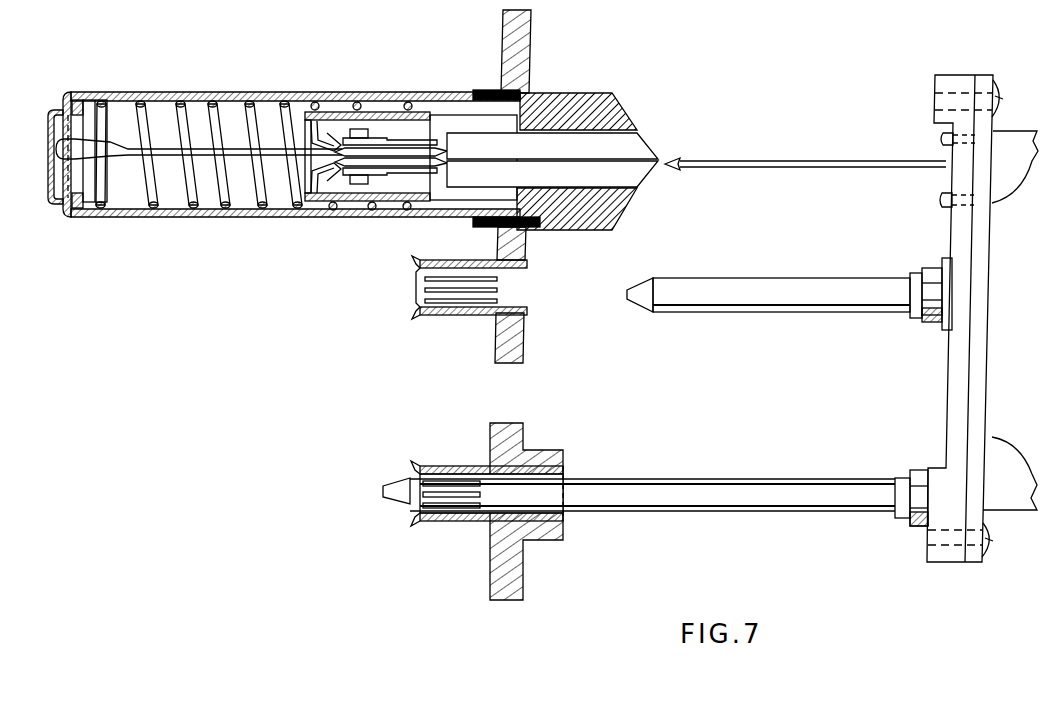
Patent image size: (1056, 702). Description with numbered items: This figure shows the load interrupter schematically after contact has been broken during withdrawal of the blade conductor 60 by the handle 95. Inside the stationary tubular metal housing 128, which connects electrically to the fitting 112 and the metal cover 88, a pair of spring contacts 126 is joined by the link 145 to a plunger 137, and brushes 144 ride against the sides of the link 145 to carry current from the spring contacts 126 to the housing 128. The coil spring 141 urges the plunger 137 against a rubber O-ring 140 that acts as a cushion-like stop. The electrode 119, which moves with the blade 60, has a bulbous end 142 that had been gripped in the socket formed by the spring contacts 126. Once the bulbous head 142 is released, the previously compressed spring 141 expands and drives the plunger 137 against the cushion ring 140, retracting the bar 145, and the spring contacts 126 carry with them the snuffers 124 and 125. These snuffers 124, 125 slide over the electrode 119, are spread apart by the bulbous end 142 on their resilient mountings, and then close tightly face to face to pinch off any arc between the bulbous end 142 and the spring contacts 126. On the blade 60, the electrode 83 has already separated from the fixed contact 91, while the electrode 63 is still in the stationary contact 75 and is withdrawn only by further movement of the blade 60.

The rubber O-ring 140 is at (80, 98).
The coil spring 141 is at (203, 102).
The brushes 144 is at (327, 131).
The tubular metal housing 128 is at (383, 111).
The fitting 112 is at (570, 93).
The spring contacts 126 is at (436, 147).
The snuffer element 124 is at (556, 156).
The snuffer element 125 is at (598, 185).
The bulbous end 142 is at (668, 158).
The electrode 119 is at (806, 143).
The plunger 137 is at (111, 190).
The link 145 is at (240, 173).
The fixed contact 91 is at (445, 318).
The metal cover 88 is at (520, 345).
The electrode 83 is at (780, 302).
The blade conductor 60 is at (982, 300).
The handle 95 is at (1015, 470).
The electrode 63 is at (782, 486).
The stationary contact 75 is at (450, 521).